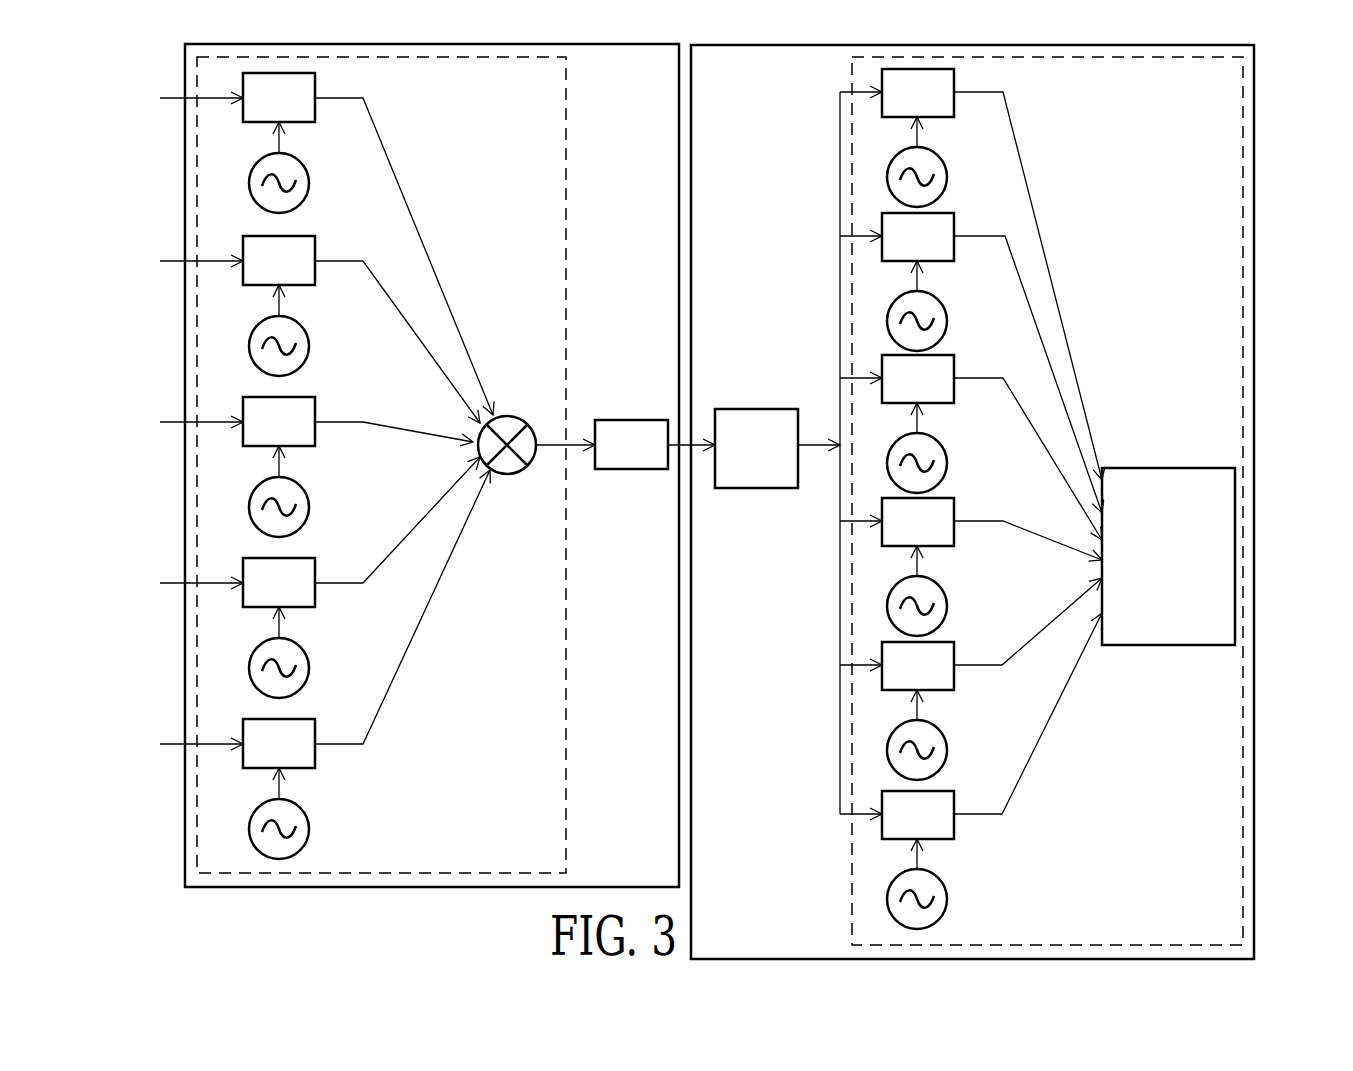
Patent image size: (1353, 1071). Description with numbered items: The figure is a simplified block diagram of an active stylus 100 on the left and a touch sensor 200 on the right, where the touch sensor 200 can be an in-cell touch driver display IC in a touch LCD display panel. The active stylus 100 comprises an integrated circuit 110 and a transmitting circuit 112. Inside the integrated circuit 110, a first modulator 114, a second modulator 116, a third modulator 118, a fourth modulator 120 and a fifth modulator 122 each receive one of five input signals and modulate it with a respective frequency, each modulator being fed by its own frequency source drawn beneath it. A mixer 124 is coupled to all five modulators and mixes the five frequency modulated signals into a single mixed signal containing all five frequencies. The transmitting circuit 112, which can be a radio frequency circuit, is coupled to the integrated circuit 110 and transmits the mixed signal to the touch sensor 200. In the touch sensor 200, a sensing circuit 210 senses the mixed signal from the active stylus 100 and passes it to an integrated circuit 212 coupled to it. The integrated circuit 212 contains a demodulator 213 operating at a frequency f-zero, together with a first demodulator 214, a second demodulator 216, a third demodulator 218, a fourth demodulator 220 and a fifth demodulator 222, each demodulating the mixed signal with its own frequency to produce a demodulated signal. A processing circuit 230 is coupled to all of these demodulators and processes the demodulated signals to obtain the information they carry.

The active stylus 100 is at (185, 167).
The integrated circuit 110 is at (566, 136).
The transmitting circuit 112 is at (636, 420).
The first modulator 114 is at (258, 113).
The second modulator 116 is at (258, 276).
The third modulator 118 is at (258, 437).
The fourth modulator 120 is at (258, 598).
The fifth modulator 122 is at (258, 759).
The mixer 124 is at (525, 416).
The touch sensor 200 is at (1254, 200).
The sensing circuit 210 is at (765, 409).
The integrated circuit 212 is at (1243, 136).
The demodulator 213 is at (897, 109).
The first demodulator 214 is at (897, 253).
The second demodulator 216 is at (897, 395).
The third demodulator 218 is at (897, 538).
The fourth demodulator 220 is at (897, 682).
The fifth demodulator 222 is at (897, 831).
The processing circuit 230 is at (1165, 468).